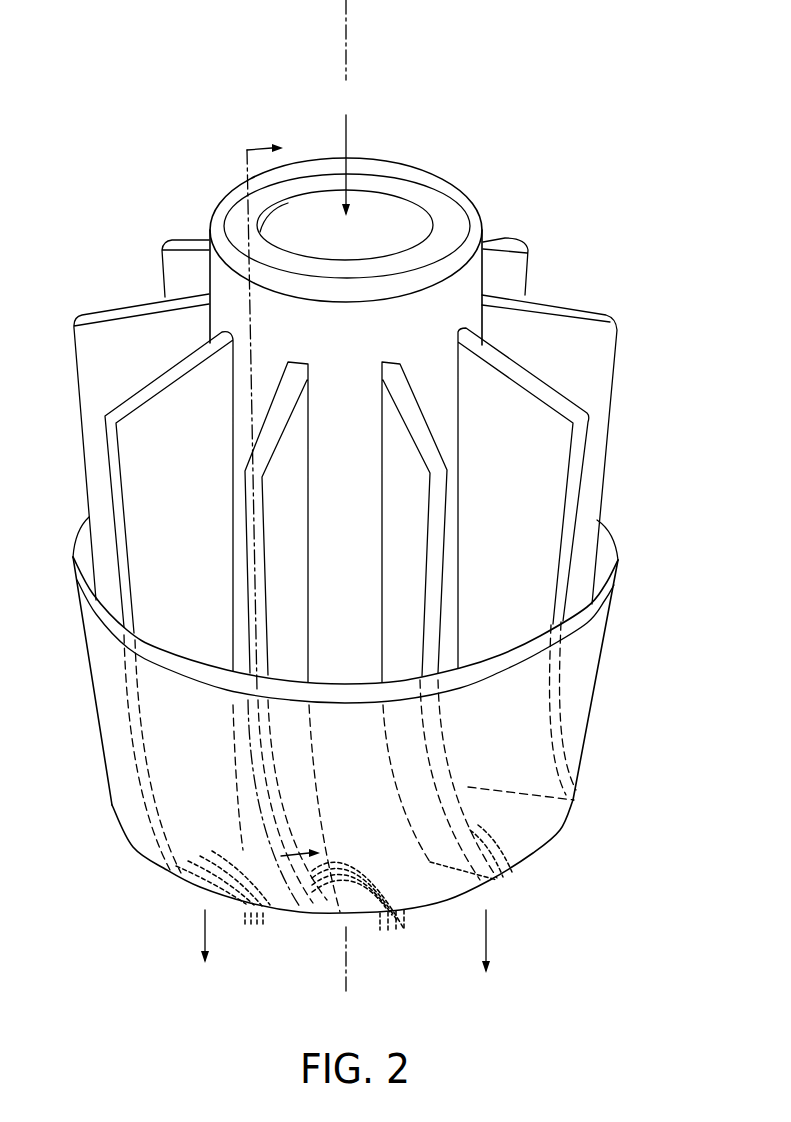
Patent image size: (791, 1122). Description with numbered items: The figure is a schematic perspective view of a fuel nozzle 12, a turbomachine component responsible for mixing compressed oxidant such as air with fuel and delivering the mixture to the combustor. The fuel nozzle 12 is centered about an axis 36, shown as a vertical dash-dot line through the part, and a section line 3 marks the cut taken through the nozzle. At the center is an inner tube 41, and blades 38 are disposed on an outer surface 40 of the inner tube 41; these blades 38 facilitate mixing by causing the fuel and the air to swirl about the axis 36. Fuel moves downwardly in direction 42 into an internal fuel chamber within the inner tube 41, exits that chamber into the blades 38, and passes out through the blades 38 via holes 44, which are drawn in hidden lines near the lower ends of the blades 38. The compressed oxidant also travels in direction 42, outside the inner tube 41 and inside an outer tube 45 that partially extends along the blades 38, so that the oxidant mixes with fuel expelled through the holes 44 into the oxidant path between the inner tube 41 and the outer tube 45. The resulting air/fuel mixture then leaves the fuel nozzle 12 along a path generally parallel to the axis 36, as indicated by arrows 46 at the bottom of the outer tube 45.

The fuel nozzle 12 is at (523, 82).
The axis 36 is at (346, 31).
The blades 38 is at (173, 412).
The outer surface 40 is at (270, 355).
The inner tube 41 is at (447, 208).
The direction 42 is at (347, 143).
The holes 44 is at (498, 547).
The outer tube 45 is at (503, 818).
The arrows 46 is at (205, 935).
The section line 3- 3 is at (283, 519).